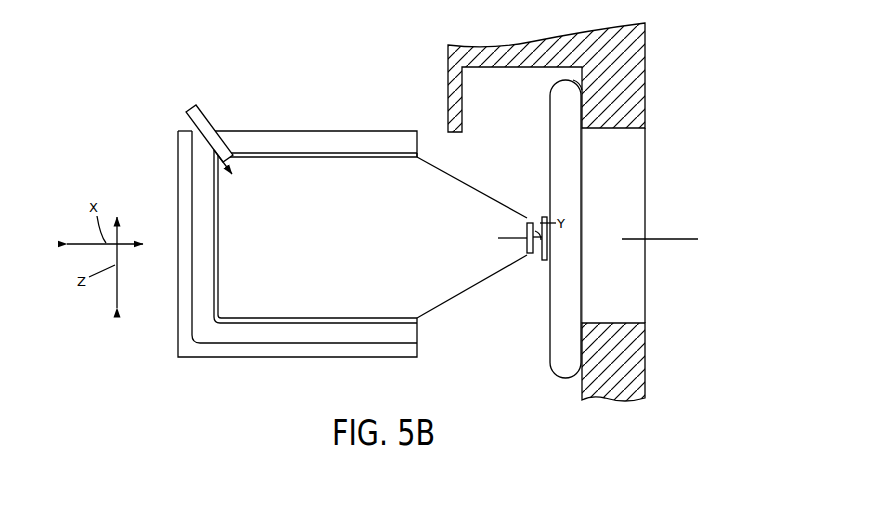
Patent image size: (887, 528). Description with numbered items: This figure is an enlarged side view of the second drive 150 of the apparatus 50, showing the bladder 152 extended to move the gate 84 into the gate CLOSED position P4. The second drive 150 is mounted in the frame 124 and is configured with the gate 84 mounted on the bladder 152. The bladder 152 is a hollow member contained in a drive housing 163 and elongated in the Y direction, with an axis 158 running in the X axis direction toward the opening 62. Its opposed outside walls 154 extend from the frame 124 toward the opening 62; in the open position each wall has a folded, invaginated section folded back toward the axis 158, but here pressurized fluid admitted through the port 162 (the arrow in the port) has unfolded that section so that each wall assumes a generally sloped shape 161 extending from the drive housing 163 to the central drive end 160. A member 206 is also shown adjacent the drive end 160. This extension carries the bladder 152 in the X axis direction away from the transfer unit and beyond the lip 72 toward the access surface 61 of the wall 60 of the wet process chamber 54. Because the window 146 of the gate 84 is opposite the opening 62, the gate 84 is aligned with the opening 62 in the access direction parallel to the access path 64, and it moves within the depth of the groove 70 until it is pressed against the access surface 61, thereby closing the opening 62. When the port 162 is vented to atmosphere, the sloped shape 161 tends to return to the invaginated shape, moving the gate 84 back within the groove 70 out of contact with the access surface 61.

The fluid dispensing system 50 is at (110, 80).
The frame 124 is at (185, 156).
The window 146 is at (423, 320).
The second drive 150 is at (297, 146).
The drive housing 163 is at (411, 145).
The bladder 152 is at (419, 152).
The port 162 is at (196, 107).
The outside walls 154 is at (438, 171).
The axis 158 is at (519, 237).
The sloped shape 161 is at (478, 257).
The central drive end 160 is at (530, 222).
The seal member 206 is at (536, 261).
The wet process chamber 54 is at (649, 106).
The lip 72 is at (455, 108).
The access surface 61 is at (578, 80).
The gate CLOSED position P4 is at (572, 75).
The opening 62 is at (628, 130).
The access path 64 is at (668, 238).
The wall 60 is at (636, 352).
The gate 84 is at (563, 331).
The groove 70 is at (556, 390).